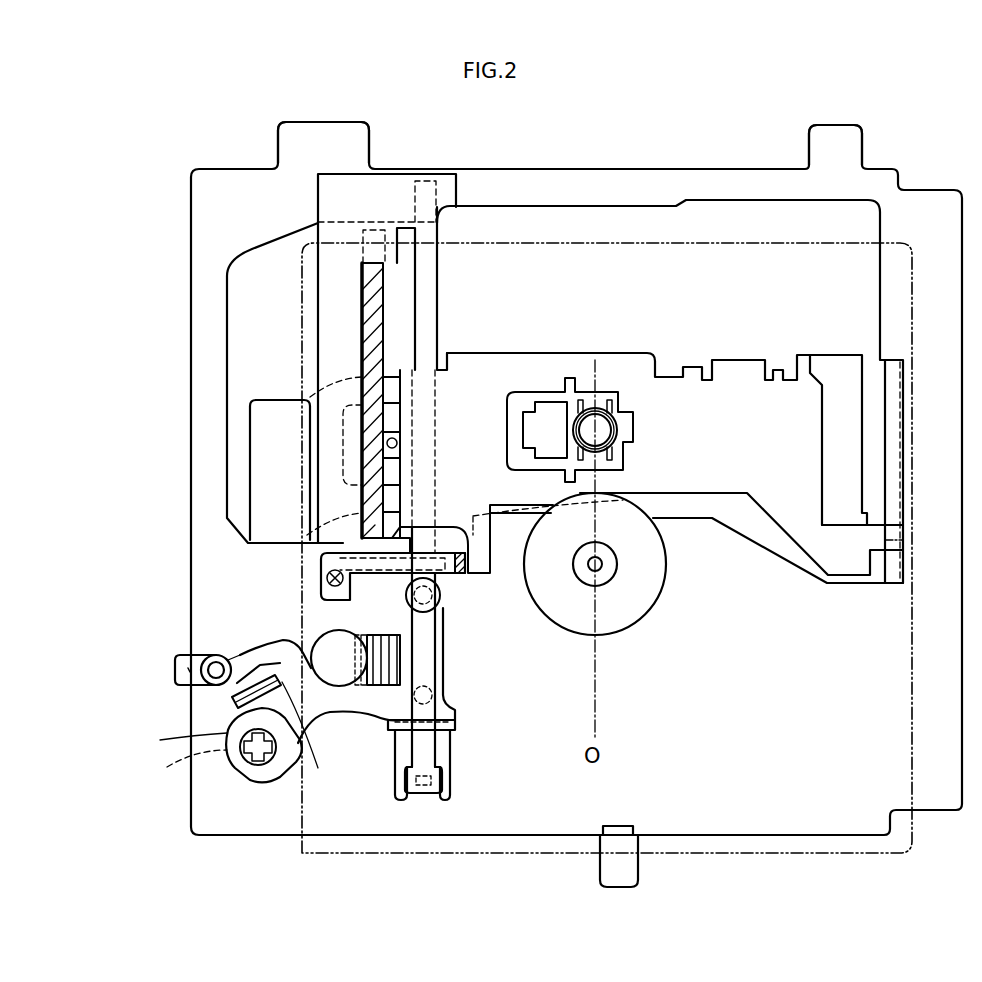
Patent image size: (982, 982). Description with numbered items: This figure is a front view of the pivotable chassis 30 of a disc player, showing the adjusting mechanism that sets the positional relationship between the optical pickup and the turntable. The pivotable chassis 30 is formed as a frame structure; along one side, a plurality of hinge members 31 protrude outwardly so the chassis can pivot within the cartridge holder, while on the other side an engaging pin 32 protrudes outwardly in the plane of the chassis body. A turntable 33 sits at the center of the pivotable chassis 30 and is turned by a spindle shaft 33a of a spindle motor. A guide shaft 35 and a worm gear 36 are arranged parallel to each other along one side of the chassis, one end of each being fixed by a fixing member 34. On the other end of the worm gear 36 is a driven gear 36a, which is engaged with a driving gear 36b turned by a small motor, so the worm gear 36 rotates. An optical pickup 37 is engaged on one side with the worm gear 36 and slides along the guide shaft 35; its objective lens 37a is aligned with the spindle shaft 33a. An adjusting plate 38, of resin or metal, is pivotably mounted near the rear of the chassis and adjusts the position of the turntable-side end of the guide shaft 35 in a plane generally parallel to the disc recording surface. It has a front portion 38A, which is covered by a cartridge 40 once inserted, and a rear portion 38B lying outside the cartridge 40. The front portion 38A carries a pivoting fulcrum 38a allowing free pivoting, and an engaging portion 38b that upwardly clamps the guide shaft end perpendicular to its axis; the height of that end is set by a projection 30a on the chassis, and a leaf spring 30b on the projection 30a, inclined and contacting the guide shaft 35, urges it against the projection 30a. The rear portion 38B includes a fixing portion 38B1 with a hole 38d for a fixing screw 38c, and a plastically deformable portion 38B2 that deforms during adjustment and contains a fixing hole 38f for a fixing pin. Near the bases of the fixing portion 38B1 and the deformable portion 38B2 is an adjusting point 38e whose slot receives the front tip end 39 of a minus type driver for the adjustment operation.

The pivotable chassis 30 is at (205, 297).
The projection 30a is at (440, 556).
The leaf spring 30b is at (327, 562).
The hinge members 31 is at (310, 128).
The engaging pin 32 is at (622, 873).
The turntable 33 is at (633, 613).
The spindle shaft 33a is at (600, 570).
The fixing member 34 is at (385, 190).
The guide shaft 35 is at (430, 322).
The worm gear 36 is at (370, 325).
The driven gear 36a is at (375, 684).
The driving gear 36b is at (323, 648).
The optical pickup 37 is at (636, 368).
The objective lens 37a is at (592, 407).
The adjusting plate 38 is at (378, 740).
The front portion 38A is at (440, 672).
The rear portion 38B is at (280, 760).
The fixing portion 38B1 is at (243, 765).
The plastically deformable portion 38B2 is at (240, 653).
The pivoting fulcrum 38a is at (430, 598).
The engaging portion 38b is at (447, 730).
The fixing screw 38c is at (182, 777).
The hole 38d is at (172, 741).
The adjusting point 38e is at (313, 743).
The fixing hole 38f is at (215, 660).
The front tip end of minus type driver 39 is at (232, 700).
The cartridge 40 is at (757, 856).